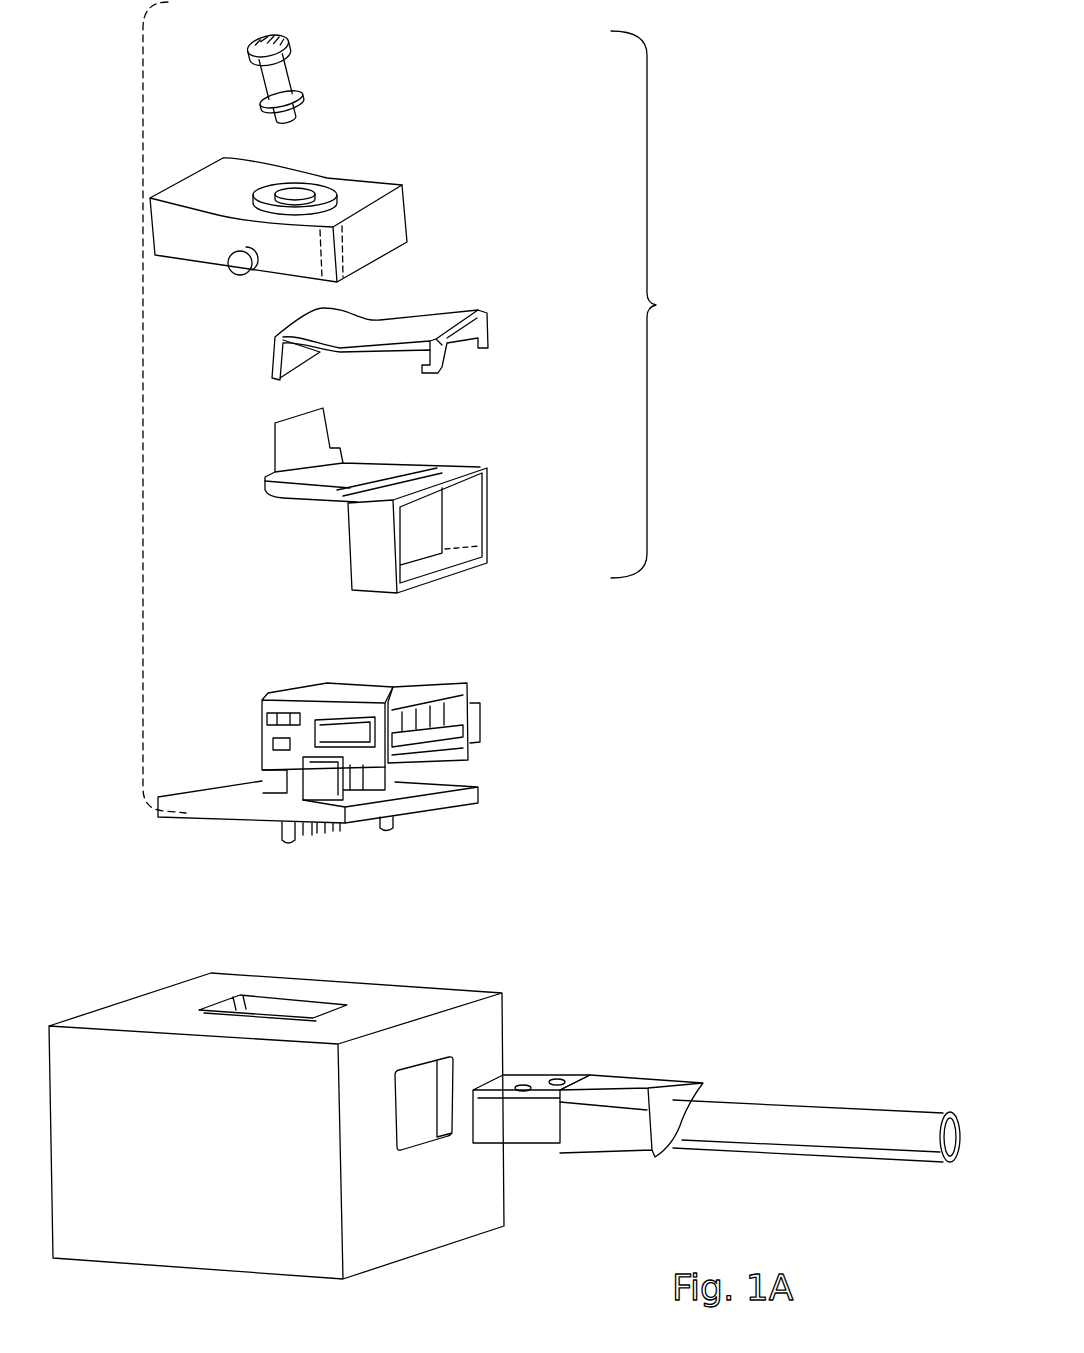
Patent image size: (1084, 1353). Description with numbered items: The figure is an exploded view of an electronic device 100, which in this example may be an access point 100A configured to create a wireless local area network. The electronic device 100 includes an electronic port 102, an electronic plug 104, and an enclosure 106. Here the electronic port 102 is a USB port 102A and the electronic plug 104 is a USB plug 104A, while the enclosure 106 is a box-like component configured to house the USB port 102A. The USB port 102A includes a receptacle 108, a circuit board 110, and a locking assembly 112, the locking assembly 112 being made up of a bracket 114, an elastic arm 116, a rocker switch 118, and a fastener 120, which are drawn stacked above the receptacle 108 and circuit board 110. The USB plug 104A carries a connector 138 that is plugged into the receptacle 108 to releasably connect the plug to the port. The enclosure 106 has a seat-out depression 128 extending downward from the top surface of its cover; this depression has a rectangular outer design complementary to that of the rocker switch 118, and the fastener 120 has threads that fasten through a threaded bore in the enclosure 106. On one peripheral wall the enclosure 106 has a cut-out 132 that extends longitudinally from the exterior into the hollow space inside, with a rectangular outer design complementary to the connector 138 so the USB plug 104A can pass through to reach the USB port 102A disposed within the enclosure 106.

The electronic device 100 is at (812, 64).
The access point 100A is at (714, 100).
The electronic port 102 is at (113, 407).
The USB port 102A is at (143, 478).
The electronic plug 104 is at (716, 1099).
The USB plug 104A is at (716, 1099).
The enclosure 106 is at (327, 1094).
The receptacle 108 is at (433, 677).
The circuit board 110 is at (433, 818).
The locking assembly 112 is at (656, 305).
The bracket 114 is at (500, 497).
The elastic arm 116 is at (495, 320).
The rocker switch 118 is at (378, 163).
The fastener 120 is at (308, 72).
The seat-out depression 128 is at (232, 1000).
The cut-out 132 is at (417, 1153).
The connector 138 is at (522, 1125).